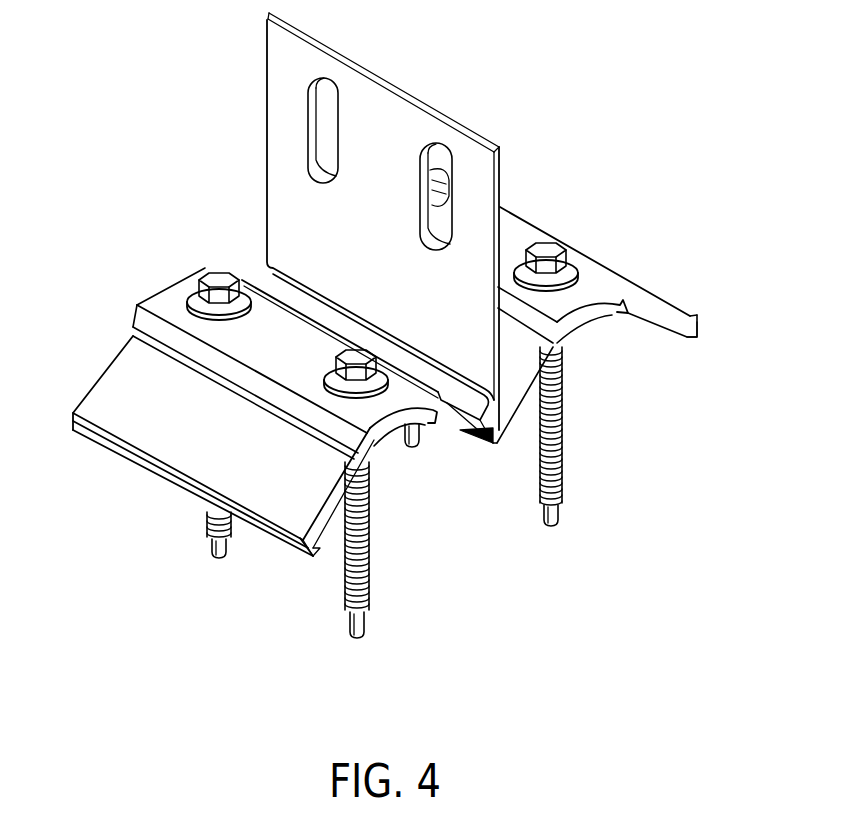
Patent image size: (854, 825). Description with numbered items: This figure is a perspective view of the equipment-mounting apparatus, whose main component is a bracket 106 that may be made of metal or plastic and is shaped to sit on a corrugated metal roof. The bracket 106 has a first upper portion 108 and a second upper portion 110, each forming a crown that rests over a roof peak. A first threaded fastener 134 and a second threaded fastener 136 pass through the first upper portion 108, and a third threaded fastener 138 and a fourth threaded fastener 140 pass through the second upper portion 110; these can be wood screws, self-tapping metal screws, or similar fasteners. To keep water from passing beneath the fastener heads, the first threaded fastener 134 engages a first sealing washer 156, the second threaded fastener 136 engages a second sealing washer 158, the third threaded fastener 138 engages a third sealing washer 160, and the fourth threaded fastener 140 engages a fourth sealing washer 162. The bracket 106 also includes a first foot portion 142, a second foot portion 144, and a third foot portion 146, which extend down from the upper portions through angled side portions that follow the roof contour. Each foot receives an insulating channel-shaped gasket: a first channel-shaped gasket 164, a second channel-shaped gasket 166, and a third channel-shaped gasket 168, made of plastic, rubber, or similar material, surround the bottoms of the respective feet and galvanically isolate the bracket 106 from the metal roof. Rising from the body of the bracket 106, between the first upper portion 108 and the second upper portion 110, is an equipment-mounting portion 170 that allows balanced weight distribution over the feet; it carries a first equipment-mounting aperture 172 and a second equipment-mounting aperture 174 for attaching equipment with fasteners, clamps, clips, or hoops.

The bracket 106 is at (520, 157).
The first upper portion 108 is at (150, 295).
The second upper portion 110 is at (609, 270).
The first threaded fastener 134 is at (215, 265).
The second threaded fastener 136 is at (358, 345).
The third threaded fastener 138 is at (550, 240).
The fourth threaded fastener 140 is at (416, 448).
The first foot portion 142 is at (307, 532).
The second foot portion 144 is at (480, 390).
The third foot portion 146 is at (688, 303).
The first sealing washer 156 is at (197, 288).
The second sealing washer 158 is at (376, 362).
The third sealing washer 160 is at (573, 262).
The fourth sealing washer 162 is at (438, 172).
The first channel-shaped gasket 164 is at (301, 556).
The second channel-shaped gasket 166 is at (495, 445).
The third channel-shaped gasket 168 is at (688, 340).
The equipment-mounting portion 170 is at (265, 63).
The first equipment-mounting aperture 172 is at (307, 125).
The second equipment-mounting aperture 174 is at (430, 200).